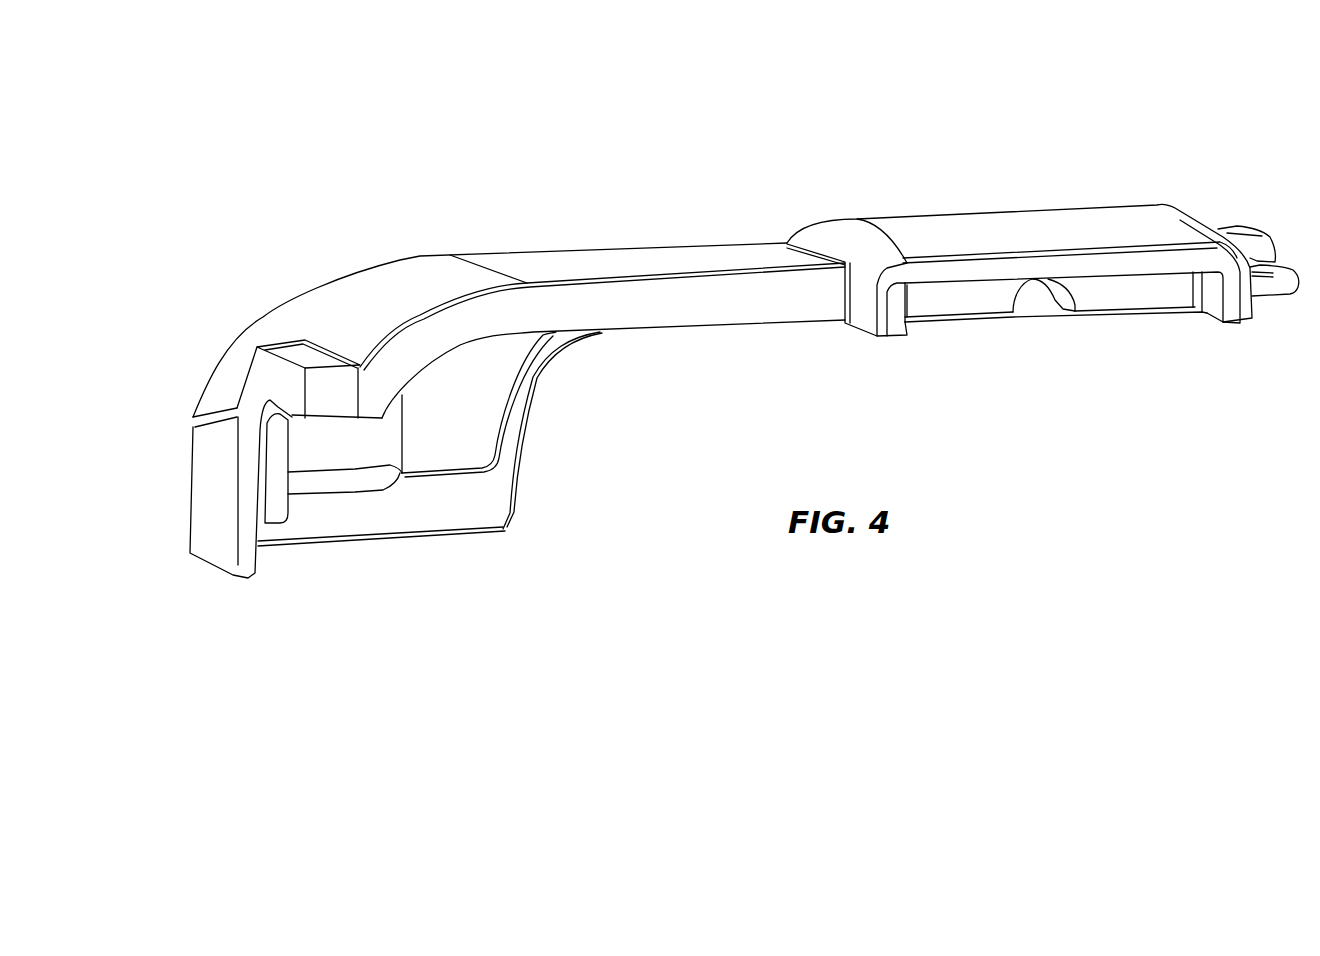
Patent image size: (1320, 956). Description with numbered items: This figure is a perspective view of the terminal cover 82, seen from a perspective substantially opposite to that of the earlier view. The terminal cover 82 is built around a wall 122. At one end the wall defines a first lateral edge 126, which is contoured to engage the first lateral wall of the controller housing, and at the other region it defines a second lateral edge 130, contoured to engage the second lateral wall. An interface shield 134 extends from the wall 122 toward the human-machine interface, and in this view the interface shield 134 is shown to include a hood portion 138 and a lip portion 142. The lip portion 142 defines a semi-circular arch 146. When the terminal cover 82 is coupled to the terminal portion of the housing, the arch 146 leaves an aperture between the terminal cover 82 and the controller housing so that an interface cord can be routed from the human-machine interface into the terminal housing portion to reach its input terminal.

The terminal cover 82 is at (698, 339).
The wall 122 is at (634, 262).
The first lateral edge 126 is at (223, 515).
The second lateral edge 130 is at (537, 399).
The interface shield 134 is at (1043, 273).
The hood portion 138 is at (1152, 262).
The lip portion 142 is at (944, 296).
The semi-circular arch 146 is at (1030, 292).